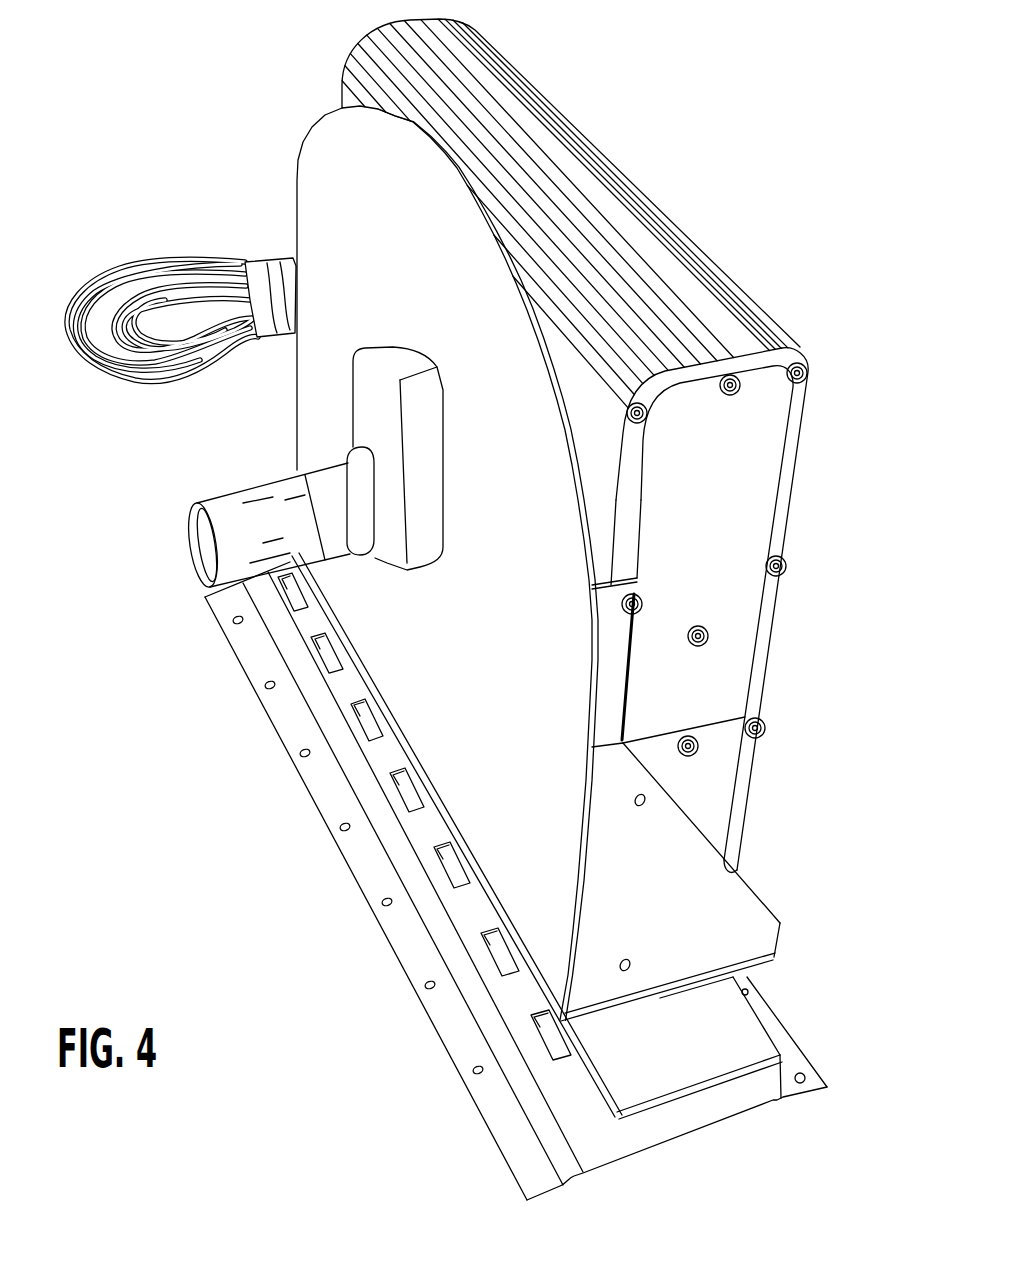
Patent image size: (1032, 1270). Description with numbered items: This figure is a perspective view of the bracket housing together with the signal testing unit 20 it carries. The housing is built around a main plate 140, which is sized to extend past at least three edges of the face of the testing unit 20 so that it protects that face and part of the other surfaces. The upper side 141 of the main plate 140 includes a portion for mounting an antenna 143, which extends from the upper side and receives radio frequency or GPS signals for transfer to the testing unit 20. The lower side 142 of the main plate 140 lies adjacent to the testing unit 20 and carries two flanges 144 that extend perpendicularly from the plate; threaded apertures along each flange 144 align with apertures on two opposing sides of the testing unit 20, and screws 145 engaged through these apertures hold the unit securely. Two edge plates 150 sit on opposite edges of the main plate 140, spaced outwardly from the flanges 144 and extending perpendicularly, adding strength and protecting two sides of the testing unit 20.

The testing unit 20 is at (717, 337).
The main plate 140 is at (473, 672).
The upper side 141 is at (338, 174).
The lower side 142 is at (502, 226).
The antenna 143 is at (358, 565).
The flange 144 is at (613, 665).
The screw 145 is at (636, 614).
The edge plate 150 is at (752, 935).